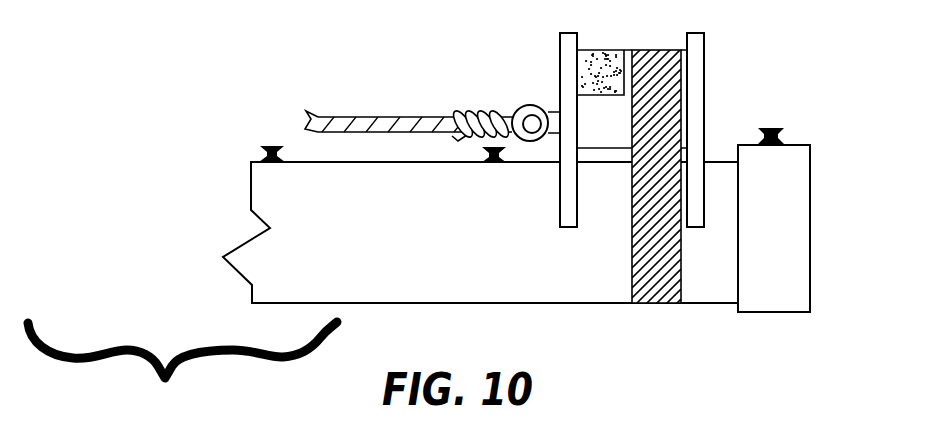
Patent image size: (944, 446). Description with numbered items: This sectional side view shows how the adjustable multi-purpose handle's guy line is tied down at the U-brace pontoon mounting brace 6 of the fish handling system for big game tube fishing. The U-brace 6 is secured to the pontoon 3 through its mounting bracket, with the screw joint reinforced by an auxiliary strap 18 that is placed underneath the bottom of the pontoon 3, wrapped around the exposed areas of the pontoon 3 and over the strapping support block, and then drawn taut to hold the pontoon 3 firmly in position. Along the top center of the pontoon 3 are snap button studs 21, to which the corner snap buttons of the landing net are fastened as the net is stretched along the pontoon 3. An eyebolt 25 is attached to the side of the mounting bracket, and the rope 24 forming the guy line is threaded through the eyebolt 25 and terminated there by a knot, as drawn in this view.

The pontoon 3 is at (237, 188).
The U-brace pontoon mounting brace 6 is at (721, 105).
The auxiliary strap 18 is at (657, 317).
The snap button stud 21 is at (270, 134).
The rope 24 is at (355, 105).
The eyebolt 25 is at (538, 90).